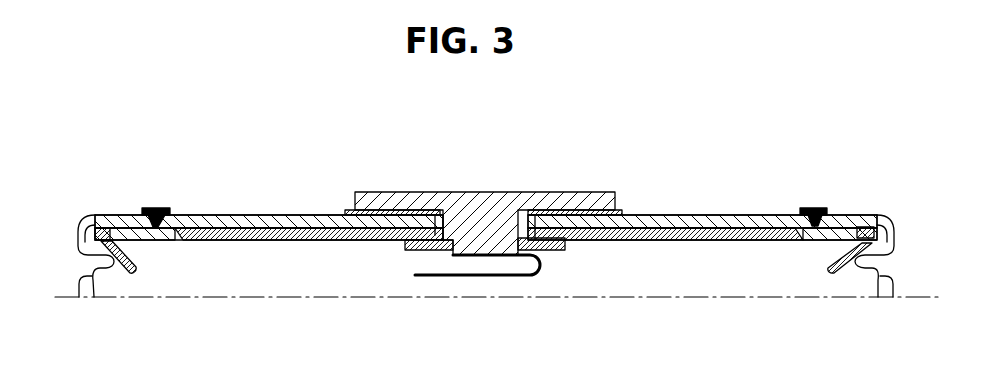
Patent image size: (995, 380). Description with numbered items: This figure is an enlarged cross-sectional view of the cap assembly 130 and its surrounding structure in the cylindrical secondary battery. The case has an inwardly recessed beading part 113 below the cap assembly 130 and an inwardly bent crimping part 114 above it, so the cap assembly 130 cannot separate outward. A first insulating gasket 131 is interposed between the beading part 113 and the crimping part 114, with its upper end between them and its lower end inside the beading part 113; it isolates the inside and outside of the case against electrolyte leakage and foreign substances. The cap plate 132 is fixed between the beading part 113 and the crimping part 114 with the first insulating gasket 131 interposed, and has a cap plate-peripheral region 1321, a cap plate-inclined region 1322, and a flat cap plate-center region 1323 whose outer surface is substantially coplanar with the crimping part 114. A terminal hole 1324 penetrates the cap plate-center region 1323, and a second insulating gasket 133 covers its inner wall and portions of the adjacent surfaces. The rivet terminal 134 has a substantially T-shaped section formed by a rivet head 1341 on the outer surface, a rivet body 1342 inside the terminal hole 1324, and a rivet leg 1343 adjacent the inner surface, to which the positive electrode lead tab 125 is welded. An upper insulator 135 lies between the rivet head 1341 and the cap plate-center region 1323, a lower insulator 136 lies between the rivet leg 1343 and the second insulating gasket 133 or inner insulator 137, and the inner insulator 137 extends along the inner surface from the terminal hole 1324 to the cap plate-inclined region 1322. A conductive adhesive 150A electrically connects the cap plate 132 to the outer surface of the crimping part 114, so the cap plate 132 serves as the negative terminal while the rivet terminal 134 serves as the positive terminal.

The beading part 113 is at (113, 262).
The crimping part 114 is at (110, 213).
The conductive adhesive 150A is at (153, 207).
The cap assembly 130 is at (768, 191).
The cap plate 132 is at (490, 252).
The cap plate-peripheral region 1321 is at (848, 226).
The cap plate-inclined region 1322 is at (797, 241).
The cap plate-center region 1323 is at (725, 215).
The terminal hole 1324 is at (433, 208).
The second insulating gasket 133 is at (524, 212).
The rivet terminal 134 is at (485, 242).
The rivet head 1341 is at (453, 191).
The rivet body 1342 is at (497, 222).
The rivet leg 1343 is at (497, 257).
The upper insulator 135 is at (355, 192).
The lower insulator 136 is at (409, 251).
The inner insulator 137 is at (718, 241).
The first insulating gasket 131 is at (829, 274).
The positive electrode lead tab 125 is at (541, 266).